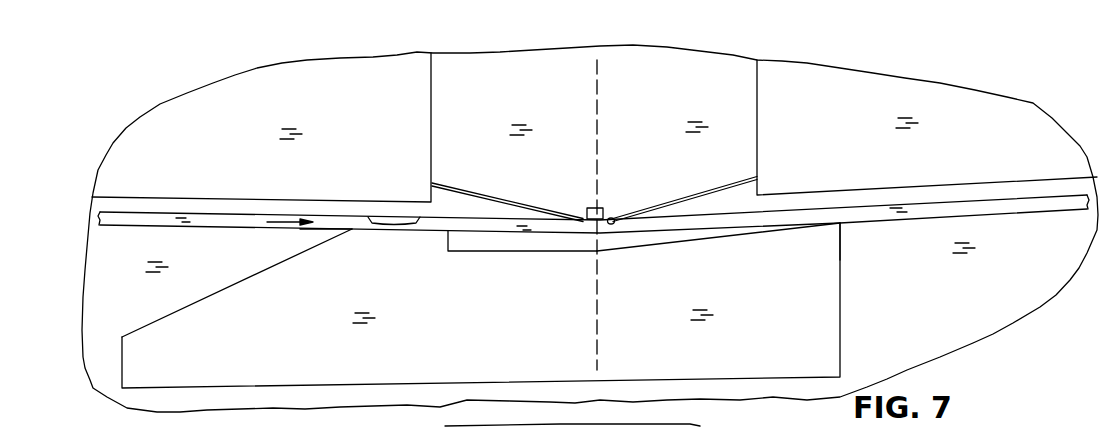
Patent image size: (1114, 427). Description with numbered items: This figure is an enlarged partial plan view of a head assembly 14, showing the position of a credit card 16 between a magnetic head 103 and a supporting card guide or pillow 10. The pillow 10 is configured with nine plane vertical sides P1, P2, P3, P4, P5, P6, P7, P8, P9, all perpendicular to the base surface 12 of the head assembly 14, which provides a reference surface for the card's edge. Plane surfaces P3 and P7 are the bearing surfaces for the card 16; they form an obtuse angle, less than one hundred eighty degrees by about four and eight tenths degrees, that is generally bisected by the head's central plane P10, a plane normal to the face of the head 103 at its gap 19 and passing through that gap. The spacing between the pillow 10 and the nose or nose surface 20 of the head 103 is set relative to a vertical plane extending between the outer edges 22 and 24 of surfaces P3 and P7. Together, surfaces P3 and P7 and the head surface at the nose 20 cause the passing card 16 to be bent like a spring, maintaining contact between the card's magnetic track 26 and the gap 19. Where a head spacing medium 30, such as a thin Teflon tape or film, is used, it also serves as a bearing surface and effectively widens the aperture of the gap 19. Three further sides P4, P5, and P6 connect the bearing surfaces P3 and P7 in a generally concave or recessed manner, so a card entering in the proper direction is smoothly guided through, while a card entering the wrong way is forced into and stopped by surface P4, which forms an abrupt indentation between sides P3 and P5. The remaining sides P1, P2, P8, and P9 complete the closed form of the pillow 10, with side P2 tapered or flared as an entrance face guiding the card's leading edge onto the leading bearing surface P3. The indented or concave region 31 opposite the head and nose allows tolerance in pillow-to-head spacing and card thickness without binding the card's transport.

The card guide or pillow 10 is at (840, 317).
The base surface 12 is at (104, 241).
The head assembly 14 is at (1032, 103).
The card 16 is at (98, 199).
The gap 19 is at (584, 212).
The nose or nose surface 20 is at (609, 220).
The outer edge 22 is at (364, 230).
The outer edge 24 is at (839, 224).
The magnetic track 26 is at (383, 215).
The head spacing medium 30 is at (524, 205).
The indented or concave region 31 is at (571, 243).
The magnetic head 103 is at (750, 137).
The plane vertical side P1 is at (122, 367).
The plane vertical side P2 is at (222, 291).
The plane bearing surface P3 is at (408, 233).
The plane vertical side P4 is at (447, 242).
The plane vertical side P5 is at (517, 250).
The plane vertical side P6 is at (647, 242).
The plane bearing surface P7 is at (792, 230).
The plane vertical side P8 is at (841, 271).
The plane vertical side P9 is at (802, 377).
The central plane P10 is at (597, 115).